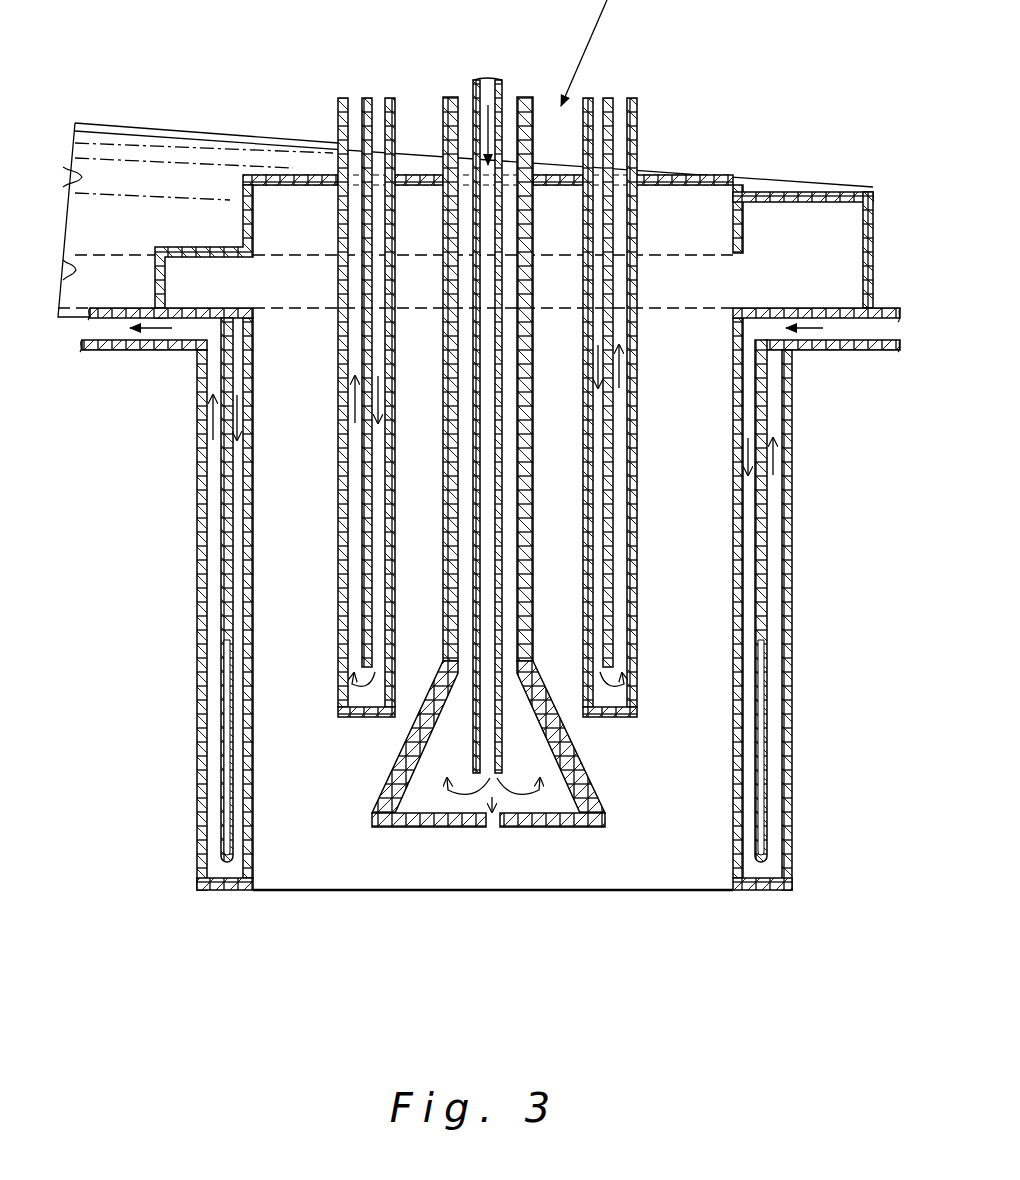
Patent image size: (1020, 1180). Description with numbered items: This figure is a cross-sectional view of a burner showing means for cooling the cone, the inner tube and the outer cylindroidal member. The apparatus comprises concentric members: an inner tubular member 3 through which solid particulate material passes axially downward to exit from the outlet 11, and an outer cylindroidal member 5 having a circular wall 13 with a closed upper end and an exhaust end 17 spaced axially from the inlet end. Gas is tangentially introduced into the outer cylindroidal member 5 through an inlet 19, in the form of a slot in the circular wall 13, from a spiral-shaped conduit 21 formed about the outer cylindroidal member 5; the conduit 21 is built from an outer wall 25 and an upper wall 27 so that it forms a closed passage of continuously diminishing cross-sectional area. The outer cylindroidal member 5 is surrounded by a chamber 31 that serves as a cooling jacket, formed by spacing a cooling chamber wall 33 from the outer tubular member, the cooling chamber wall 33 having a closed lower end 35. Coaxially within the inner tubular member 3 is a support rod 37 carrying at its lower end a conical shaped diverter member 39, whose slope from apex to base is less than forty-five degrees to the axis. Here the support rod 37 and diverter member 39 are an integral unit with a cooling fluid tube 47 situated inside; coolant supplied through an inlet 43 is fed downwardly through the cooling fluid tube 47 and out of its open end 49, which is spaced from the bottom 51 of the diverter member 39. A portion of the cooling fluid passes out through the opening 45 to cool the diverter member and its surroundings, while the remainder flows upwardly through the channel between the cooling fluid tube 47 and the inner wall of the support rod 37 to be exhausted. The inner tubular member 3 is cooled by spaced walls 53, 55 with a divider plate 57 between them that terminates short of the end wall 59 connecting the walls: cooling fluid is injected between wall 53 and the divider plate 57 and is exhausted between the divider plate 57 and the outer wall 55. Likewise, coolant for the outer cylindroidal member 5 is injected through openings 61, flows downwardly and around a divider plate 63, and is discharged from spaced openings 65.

The inner tubular member 3 is at (489, 432).
The outer cylindroidal member 5 is at (486, 650).
The outlet 11 is at (486, 808).
The circular wall 13 is at (253, 392).
The exhaust end 17 is at (673, 894).
The inlet 19 is at (261, 281).
The conduit 21 is at (185, 126).
The outer wall 25 is at (873, 256).
The upper wall 27 is at (815, 192).
The chamber 31 is at (218, 606).
The cooling chamber wall 33 is at (197, 458).
The closed lower end 35 is at (227, 890).
The support rod 37 is at (524, 375).
The conical shaped diverter member 39 is at (588, 780).
The inlet 43 is at (453, 387).
The opening 45 is at (492, 829).
The cooling fluid tube 47 is at (476, 488).
The open end 49 is at (498, 783).
The bottom 51 is at (427, 793).
The wall 53 is at (372, 596).
The outer wall 55 is at (338, 578).
The divider plate 57 is at (362, 340).
The end wall 59 is at (362, 716).
The openings 61 is at (757, 331).
The divider plate 63 is at (222, 732).
The openings 65 is at (206, 331).